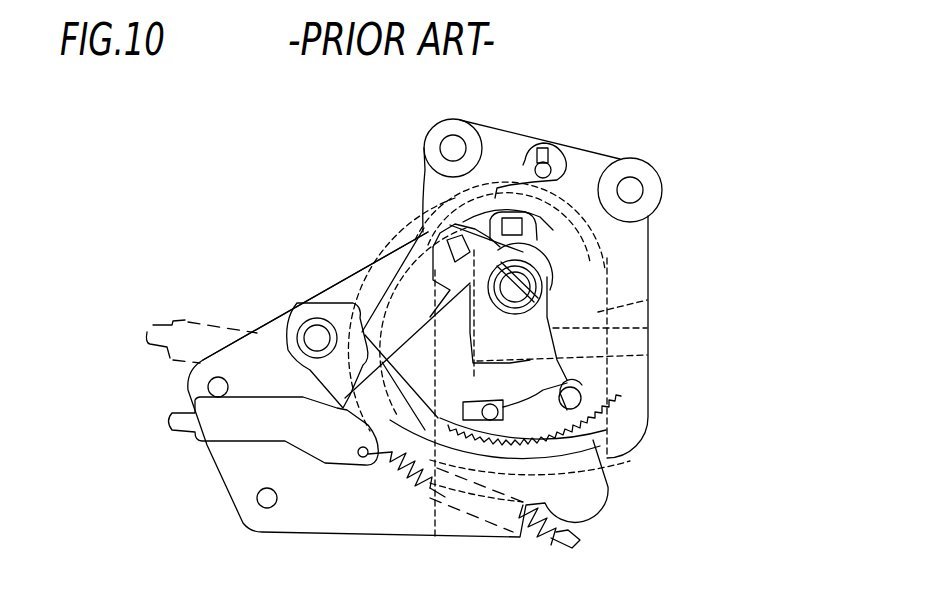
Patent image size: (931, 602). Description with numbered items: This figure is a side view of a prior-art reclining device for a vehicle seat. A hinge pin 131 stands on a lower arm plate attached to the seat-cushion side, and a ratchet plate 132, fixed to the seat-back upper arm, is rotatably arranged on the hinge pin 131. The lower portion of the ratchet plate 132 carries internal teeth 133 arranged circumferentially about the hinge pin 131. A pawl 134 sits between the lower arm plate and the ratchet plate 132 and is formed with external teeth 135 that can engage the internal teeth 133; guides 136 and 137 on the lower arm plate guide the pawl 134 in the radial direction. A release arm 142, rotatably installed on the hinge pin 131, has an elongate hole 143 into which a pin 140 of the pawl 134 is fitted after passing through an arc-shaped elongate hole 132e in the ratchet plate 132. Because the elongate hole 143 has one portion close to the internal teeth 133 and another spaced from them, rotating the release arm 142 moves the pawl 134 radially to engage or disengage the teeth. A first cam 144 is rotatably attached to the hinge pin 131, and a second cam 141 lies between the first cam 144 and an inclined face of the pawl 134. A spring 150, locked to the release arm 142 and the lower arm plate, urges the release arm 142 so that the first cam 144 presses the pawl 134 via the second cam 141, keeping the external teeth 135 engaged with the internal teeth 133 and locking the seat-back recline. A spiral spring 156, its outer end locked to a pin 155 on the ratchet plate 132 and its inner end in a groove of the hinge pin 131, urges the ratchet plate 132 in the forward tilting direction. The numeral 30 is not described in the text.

The base plate 30 is at (315, 515).
The hinge pin 131 is at (536, 286).
The ratchet plate 132 is at (636, 250).
The arc-shaped elongate hole 132e is at (581, 384).
The internal teeth 133 is at (640, 441).
The pawl 134 is at (378, 256).
The external teeth 135 is at (616, 461).
The guide 136 is at (438, 540).
The guide 137 is at (650, 354).
The pin 140 is at (646, 424).
The second cam 141 is at (650, 328).
The release arm 142 is at (216, 425).
The elongate hole 143 is at (520, 412).
The first cam 144 is at (649, 304).
The spring 150 is at (523, 545).
The pin 155 is at (547, 160).
The spiral spring 156 is at (562, 172).